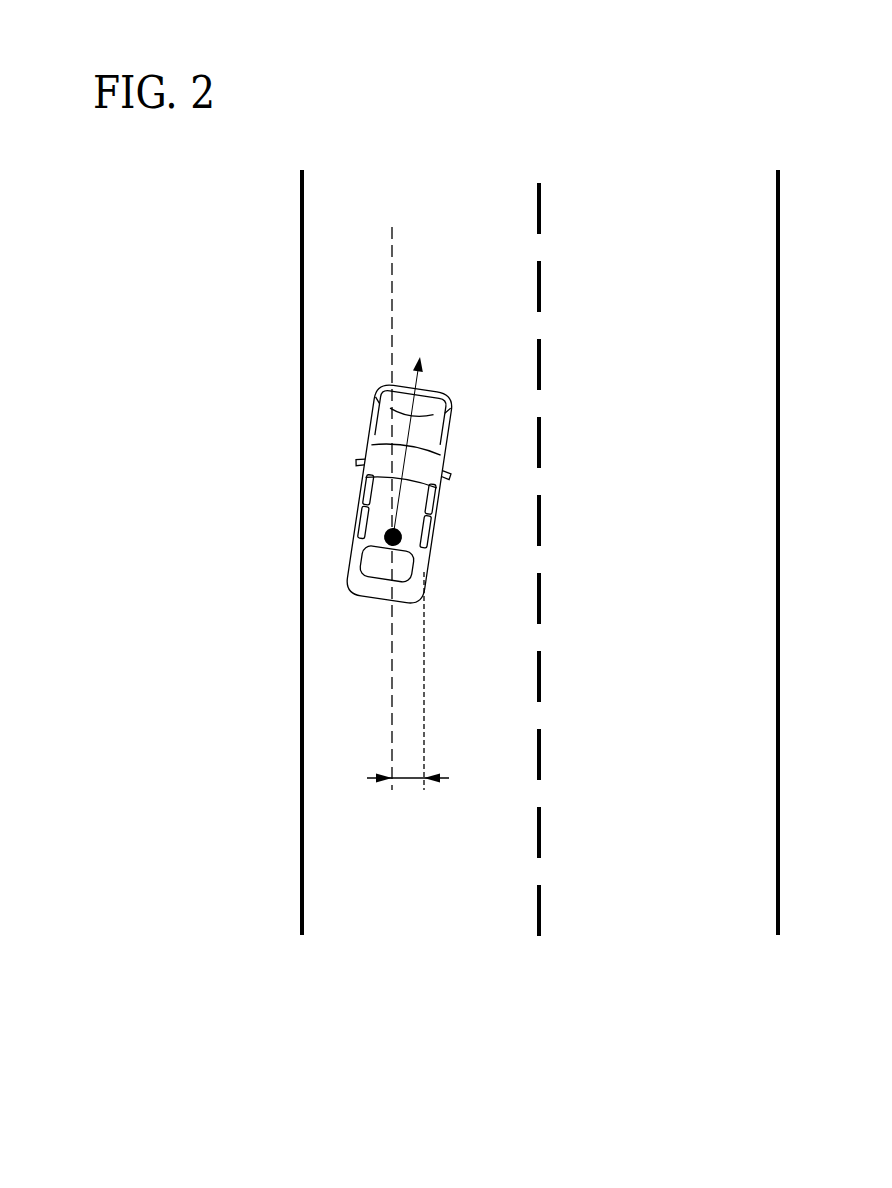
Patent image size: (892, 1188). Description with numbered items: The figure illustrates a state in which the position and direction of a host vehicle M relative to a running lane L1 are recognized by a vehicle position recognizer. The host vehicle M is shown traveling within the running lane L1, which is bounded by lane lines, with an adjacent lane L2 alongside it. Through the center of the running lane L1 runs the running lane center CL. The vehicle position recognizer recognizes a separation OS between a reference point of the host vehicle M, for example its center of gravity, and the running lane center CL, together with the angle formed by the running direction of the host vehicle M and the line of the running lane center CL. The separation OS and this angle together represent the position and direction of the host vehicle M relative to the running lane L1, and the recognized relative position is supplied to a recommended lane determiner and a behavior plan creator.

The host vehicle M is at (352, 513).
The running lane center CL is at (425, 673).
The separation OS is at (408, 801).
The running lane L1 is at (417, 912).
The adjacent lane L2 is at (662, 912).